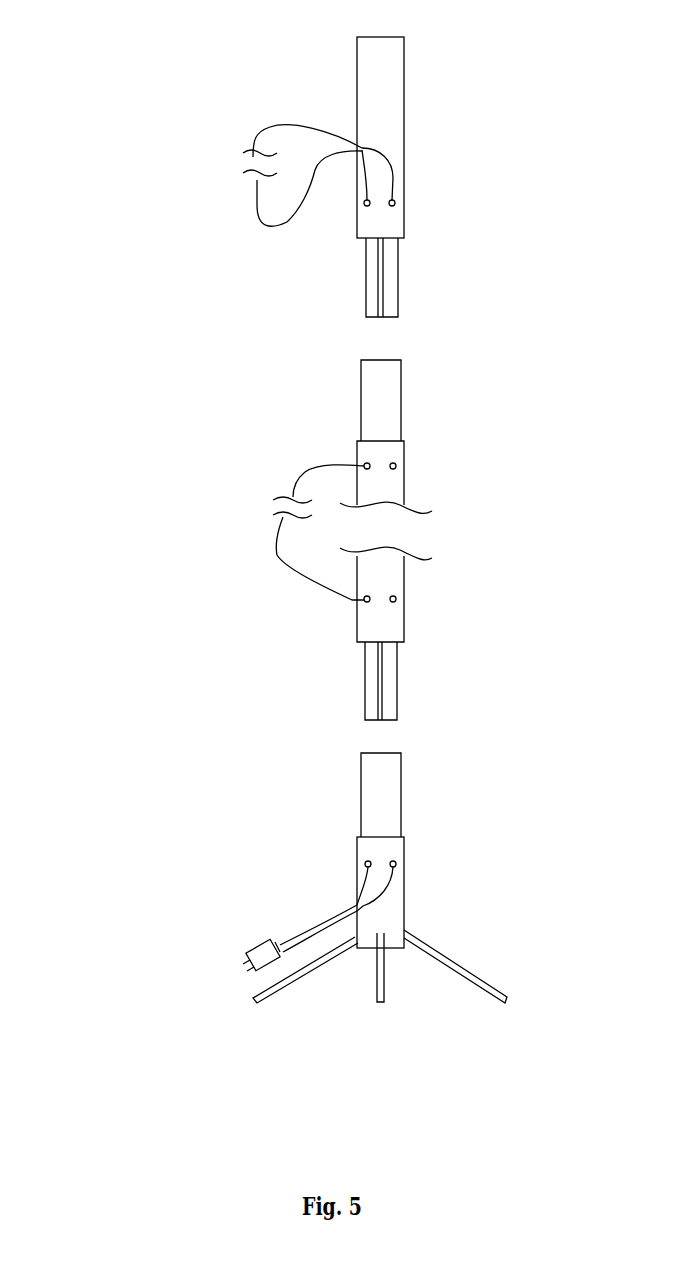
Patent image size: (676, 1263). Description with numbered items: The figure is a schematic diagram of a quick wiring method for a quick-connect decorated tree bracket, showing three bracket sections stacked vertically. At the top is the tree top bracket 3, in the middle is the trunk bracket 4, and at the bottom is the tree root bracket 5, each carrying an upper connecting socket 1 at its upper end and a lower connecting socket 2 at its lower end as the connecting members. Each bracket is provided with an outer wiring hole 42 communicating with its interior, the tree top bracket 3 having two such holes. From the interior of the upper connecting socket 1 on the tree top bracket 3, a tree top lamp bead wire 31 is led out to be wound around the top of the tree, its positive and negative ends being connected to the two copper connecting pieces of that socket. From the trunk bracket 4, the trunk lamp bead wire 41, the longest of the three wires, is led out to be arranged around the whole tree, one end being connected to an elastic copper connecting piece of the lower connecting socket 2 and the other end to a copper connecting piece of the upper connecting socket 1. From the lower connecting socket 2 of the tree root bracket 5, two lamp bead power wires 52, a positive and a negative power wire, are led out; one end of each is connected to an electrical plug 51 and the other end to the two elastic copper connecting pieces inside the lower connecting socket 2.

The upper connecting socket 1 is at (400, 680).
The lower connecting socket 2 is at (402, 382).
The tree top bracket 3 is at (402, 102).
The tree top lamp bead wire 31 is at (292, 122).
The trunk bracket 4 is at (406, 450).
The trunk lamp bead wire 41 is at (300, 468).
The outer wiring hole 42 is at (358, 463).
The tree root bracket 5 is at (405, 890).
The power cord 51 is at (313, 930).
The lamp bead power wire 52 is at (243, 957).